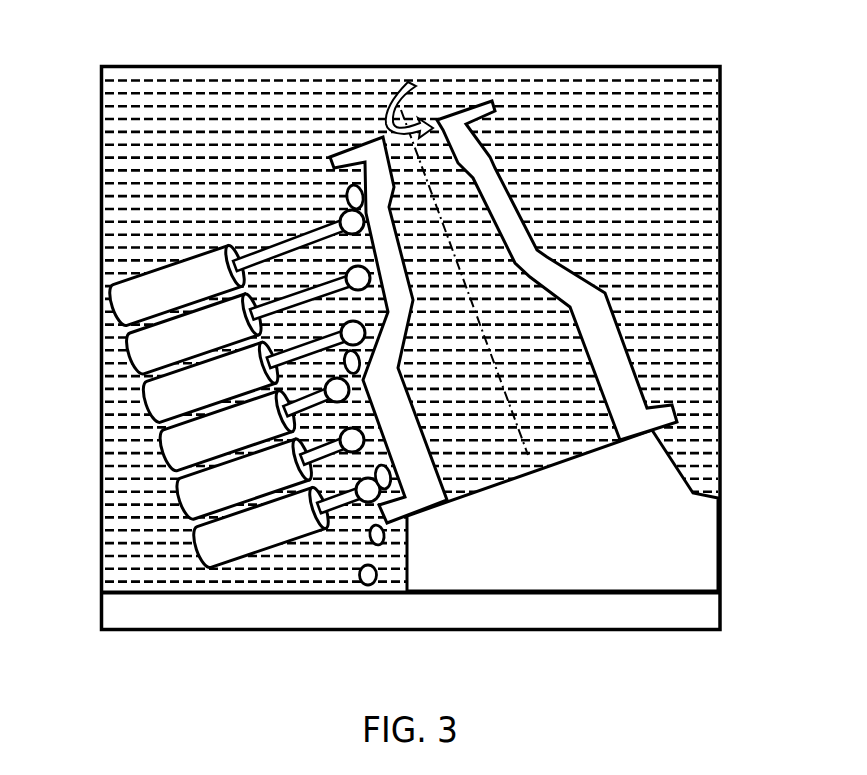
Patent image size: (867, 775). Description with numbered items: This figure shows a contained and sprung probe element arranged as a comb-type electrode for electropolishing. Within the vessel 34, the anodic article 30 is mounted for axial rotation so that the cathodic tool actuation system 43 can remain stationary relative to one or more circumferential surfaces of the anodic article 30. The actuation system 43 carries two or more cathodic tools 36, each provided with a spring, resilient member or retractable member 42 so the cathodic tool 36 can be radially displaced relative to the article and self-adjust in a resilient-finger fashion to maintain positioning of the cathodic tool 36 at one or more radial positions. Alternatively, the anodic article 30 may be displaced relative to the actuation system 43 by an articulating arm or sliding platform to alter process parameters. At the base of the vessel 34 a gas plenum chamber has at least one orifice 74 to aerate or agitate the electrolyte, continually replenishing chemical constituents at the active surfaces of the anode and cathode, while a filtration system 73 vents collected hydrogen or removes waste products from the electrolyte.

The anodic article 30 is at (620, 330).
The vessel 34 is at (102, 535).
The cathodic tool 36 is at (368, 493).
The spring, resilient member or retractable member 42 is at (320, 527).
The cathodic tool actuation system 43 is at (207, 567).
The filtration system 73 is at (537, 610).
The orifice 74 is at (363, 593).